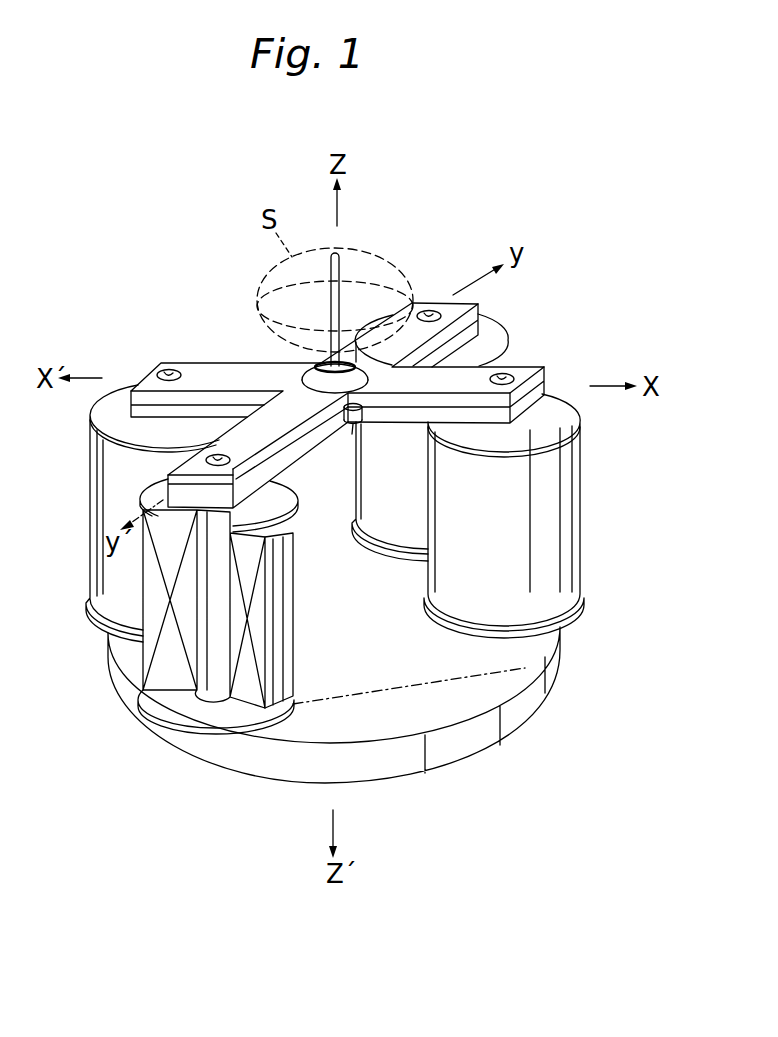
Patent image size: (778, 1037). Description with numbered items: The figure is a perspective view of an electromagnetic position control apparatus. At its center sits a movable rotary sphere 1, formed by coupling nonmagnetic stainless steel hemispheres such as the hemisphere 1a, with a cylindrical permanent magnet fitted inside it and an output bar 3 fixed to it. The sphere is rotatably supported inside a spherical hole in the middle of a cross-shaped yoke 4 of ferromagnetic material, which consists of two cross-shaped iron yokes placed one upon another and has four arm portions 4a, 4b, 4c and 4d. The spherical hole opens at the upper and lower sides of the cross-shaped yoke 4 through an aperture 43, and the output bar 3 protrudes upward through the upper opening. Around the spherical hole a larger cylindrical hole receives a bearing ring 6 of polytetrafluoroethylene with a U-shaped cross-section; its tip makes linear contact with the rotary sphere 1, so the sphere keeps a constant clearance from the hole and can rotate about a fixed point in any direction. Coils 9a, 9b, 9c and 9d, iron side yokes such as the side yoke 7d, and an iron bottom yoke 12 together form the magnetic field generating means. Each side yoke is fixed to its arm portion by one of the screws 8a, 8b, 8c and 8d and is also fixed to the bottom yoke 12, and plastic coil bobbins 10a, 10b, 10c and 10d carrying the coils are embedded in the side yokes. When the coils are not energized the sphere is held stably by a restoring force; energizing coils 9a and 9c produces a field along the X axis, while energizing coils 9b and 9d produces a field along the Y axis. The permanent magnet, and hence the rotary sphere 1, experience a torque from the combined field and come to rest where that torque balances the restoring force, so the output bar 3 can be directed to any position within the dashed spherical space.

The rotary sphere 1 is at (325, 347).
The hemisphere 1a is at (300, 368).
The output bar 3 is at (340, 270).
The cross-shaped yoke 4 is at (229, 362).
The arm portion 4a is at (513, 350).
The arm portion 4b is at (477, 300).
The arm portion 4c is at (201, 366).
The arm portion 4d is at (186, 463).
The bearing ring 6 is at (349, 428).
The side yoke 7d is at (212, 627).
The screw 8a is at (540, 368).
The screw 8b is at (428, 313).
The screw 8c is at (165, 371).
The screw 8d is at (231, 462).
The coil 9a is at (453, 600).
The coil 9b is at (398, 543).
The coil 9c is at (92, 494).
The coil 9d is at (283, 636).
The coil bobbin 10a is at (566, 403).
The coil bobbin 10b is at (500, 333).
The coil bobbin 10c is at (90, 412).
The coil bobbin 10d is at (283, 510).
The bottom yoke 12 is at (488, 692).
The aperture 43 is at (362, 412).